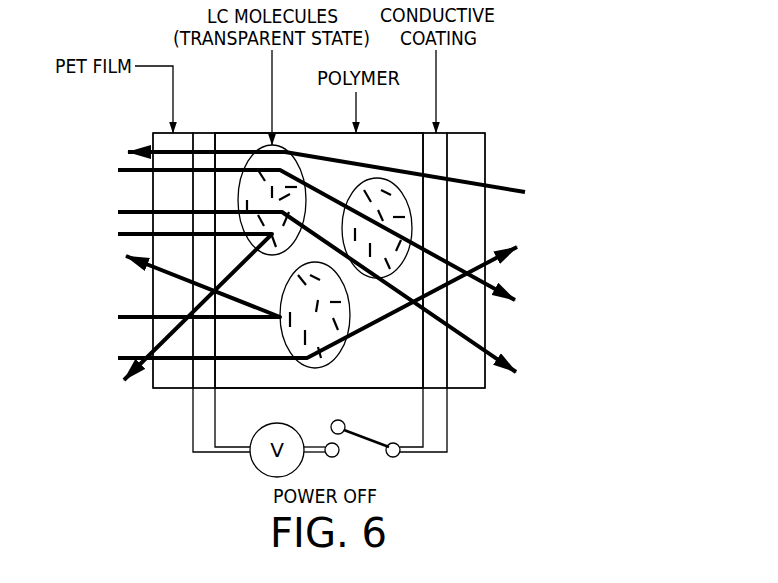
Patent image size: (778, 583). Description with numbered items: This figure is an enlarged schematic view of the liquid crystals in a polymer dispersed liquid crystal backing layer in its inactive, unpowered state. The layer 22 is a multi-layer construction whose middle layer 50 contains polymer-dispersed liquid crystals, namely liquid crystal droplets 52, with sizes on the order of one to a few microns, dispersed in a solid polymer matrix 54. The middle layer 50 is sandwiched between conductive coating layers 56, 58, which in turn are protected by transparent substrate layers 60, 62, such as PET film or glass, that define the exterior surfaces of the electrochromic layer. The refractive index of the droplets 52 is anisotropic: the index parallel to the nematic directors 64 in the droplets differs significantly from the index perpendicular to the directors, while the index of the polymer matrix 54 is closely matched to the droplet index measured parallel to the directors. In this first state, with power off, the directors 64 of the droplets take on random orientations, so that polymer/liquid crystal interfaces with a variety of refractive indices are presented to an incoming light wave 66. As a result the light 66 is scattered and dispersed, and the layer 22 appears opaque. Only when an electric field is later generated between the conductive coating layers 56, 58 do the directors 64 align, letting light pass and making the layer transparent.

The layer 22 is at (113, 295).
The middle layer 50 is at (307, 133).
The liquid crystal droplets 52 is at (362, 192).
The polymer matrix 54 is at (393, 158).
The conductive coating layer 56 is at (204, 133).
The conductive coating layer 58 is at (445, 133).
The transparent substrate layer 60 is at (158, 133).
The transparent substrate layer 62 is at (475, 133).
The nematic directors 64 is at (258, 160).
The incoming light wave 66 is at (128, 207).